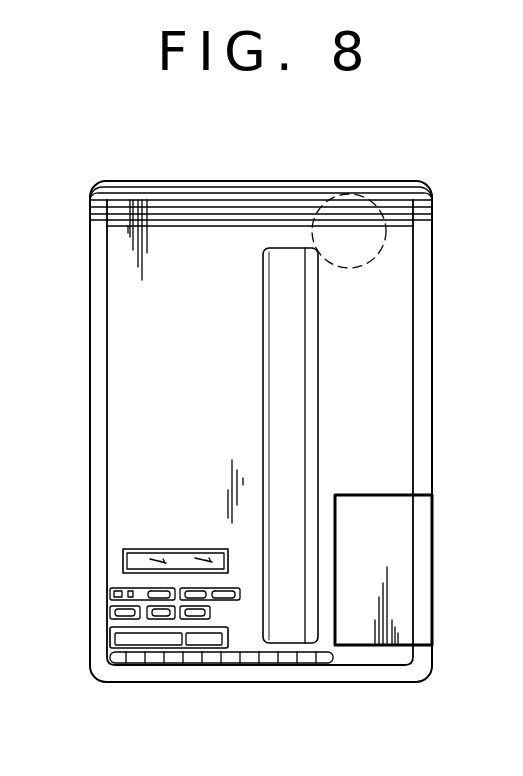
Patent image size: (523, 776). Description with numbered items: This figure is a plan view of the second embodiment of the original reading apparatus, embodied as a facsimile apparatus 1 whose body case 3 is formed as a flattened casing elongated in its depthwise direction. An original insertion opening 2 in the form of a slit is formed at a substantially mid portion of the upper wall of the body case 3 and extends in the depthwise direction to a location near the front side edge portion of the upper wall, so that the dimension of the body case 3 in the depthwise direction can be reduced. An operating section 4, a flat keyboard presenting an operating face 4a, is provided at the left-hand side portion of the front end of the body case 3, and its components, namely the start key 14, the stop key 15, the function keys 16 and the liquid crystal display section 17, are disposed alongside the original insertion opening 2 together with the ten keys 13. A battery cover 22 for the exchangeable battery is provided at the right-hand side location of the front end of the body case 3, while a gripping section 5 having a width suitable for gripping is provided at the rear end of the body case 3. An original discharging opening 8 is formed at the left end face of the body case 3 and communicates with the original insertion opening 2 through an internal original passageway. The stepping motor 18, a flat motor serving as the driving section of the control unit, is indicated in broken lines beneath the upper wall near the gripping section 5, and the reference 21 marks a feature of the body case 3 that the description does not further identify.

The facsimile apparatus 1 is at (437, 183).
The original insertion opening 2 is at (288, 377).
The body case 3 is at (432, 288).
The operating section 4 is at (120, 622).
The operating face 4a is at (136, 506).
The gripping section 5 is at (250, 192).
The original discharging opening 8 is at (90, 366).
The ten keys 13 is at (280, 658).
The start key 14 is at (140, 637).
The stop key 15 is at (205, 637).
The function keys 16 is at (112, 612).
The liquid crystal display section 17 is at (123, 560).
The stepping motor 18 is at (313, 233).
The ventilation slits 21 is at (180, 218).
The battery cover 22 is at (400, 575).